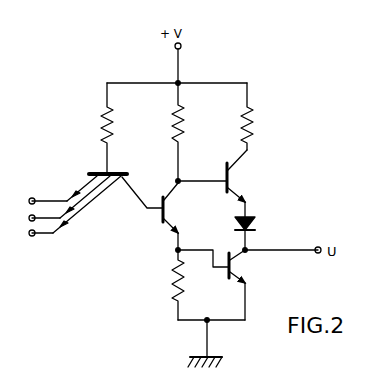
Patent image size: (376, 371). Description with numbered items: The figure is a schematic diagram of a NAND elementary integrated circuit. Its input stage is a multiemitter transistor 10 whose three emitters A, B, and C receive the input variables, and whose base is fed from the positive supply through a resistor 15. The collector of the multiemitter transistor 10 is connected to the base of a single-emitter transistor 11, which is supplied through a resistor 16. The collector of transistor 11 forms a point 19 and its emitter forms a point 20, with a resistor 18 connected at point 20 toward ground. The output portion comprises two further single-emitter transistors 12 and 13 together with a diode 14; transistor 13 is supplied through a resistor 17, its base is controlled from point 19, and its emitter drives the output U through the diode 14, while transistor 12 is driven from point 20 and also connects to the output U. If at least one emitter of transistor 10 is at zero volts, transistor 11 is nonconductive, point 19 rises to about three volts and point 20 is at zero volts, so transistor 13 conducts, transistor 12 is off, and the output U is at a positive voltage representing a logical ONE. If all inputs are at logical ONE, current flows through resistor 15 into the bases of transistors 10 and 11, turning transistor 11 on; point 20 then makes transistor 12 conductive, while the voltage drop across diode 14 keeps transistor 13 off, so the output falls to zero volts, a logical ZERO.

The multiemitter transistor 10 is at (115, 178).
The single-emitter transistor 11 is at (166, 205).
The single-emitter transistor 12 is at (232, 267).
The single-emitter transistor 13 is at (230, 180).
The diode 14 is at (256, 224).
The resistor 15 is at (114, 136).
The resistor 16 is at (184, 133).
The resistor 17 is at (254, 134).
The resistor 18 is at (173, 290).
The point 19 is at (176, 181).
The point 20 is at (193, 255).